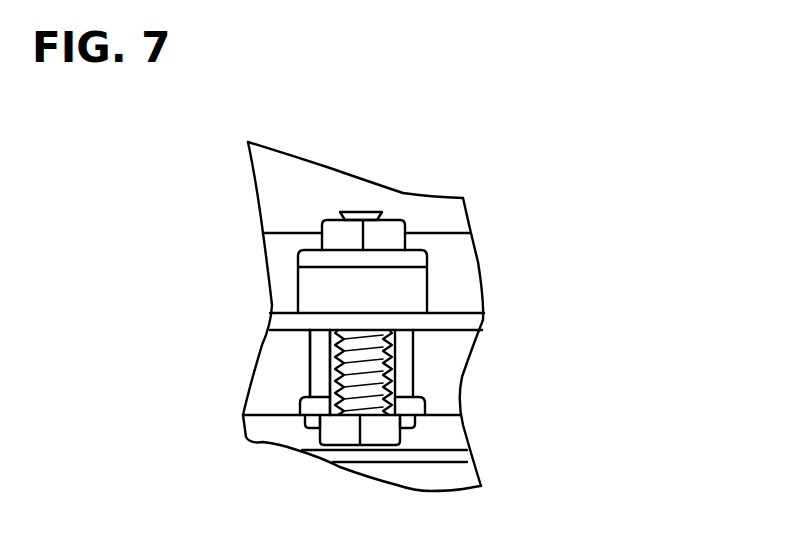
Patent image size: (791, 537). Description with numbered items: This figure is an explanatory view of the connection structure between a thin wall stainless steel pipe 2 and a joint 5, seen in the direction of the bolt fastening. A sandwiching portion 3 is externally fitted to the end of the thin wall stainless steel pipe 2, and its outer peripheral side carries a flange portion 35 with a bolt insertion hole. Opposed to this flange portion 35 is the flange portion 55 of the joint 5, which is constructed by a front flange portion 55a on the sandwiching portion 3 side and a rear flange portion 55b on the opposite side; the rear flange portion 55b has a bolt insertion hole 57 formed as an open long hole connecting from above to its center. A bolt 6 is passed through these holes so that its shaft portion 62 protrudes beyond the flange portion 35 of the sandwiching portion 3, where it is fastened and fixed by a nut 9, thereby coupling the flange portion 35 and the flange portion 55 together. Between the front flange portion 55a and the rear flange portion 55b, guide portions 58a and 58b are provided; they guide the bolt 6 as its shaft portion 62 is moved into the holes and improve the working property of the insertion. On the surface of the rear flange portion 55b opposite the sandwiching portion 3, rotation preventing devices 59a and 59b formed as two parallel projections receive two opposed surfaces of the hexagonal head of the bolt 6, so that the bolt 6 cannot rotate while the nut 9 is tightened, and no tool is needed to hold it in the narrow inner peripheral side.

The thin wall stainless steel pipe 2 is at (450, 207).
The sandwiching portion 3 is at (463, 288).
The joint 5 is at (457, 473).
The bolt 6 is at (400, 430).
The nut 9 is at (390, 243).
The flange portion 35 is at (417, 277).
The flange portion 55 is at (592, 327).
The front flange portion 55a is at (413, 322).
The rear flange portion 55b is at (425, 404).
The bolt insertion hole 57 is at (305, 395).
The guide portion 58a is at (318, 345).
The guide portion 58b is at (402, 362).
The rotation preventing device 59a is at (307, 423).
The rotation preventing device 59b is at (398, 421).
The shaft portion 62 is at (383, 212).